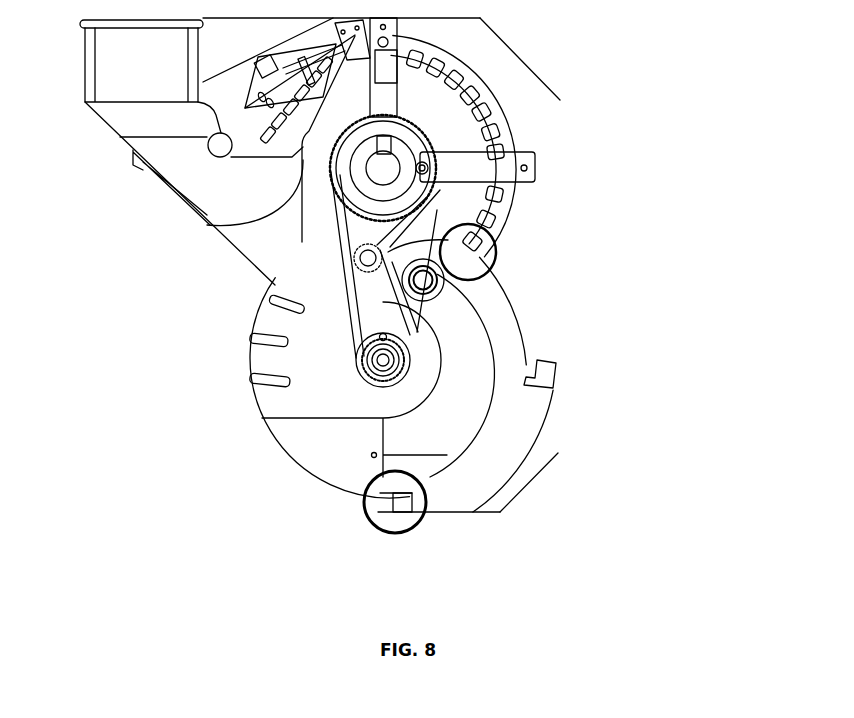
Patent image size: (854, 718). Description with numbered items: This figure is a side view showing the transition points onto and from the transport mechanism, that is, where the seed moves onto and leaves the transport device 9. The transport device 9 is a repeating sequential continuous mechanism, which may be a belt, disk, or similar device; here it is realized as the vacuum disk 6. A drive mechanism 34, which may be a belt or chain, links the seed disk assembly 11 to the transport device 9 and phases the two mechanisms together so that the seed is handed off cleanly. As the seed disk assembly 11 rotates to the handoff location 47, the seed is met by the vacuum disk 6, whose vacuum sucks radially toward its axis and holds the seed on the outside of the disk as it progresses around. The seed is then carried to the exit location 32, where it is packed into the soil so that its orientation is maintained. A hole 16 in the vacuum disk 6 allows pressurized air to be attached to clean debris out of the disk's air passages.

The vacuum disk 6 is at (300, 355).
The transport device 9 is at (505, 263).
The seed disk assembly 11 is at (480, 222).
The hole 16 is at (372, 455).
The exit location 32 is at (380, 533).
The drive mechanism 34 is at (348, 297).
The handoff location 47 is at (497, 250).